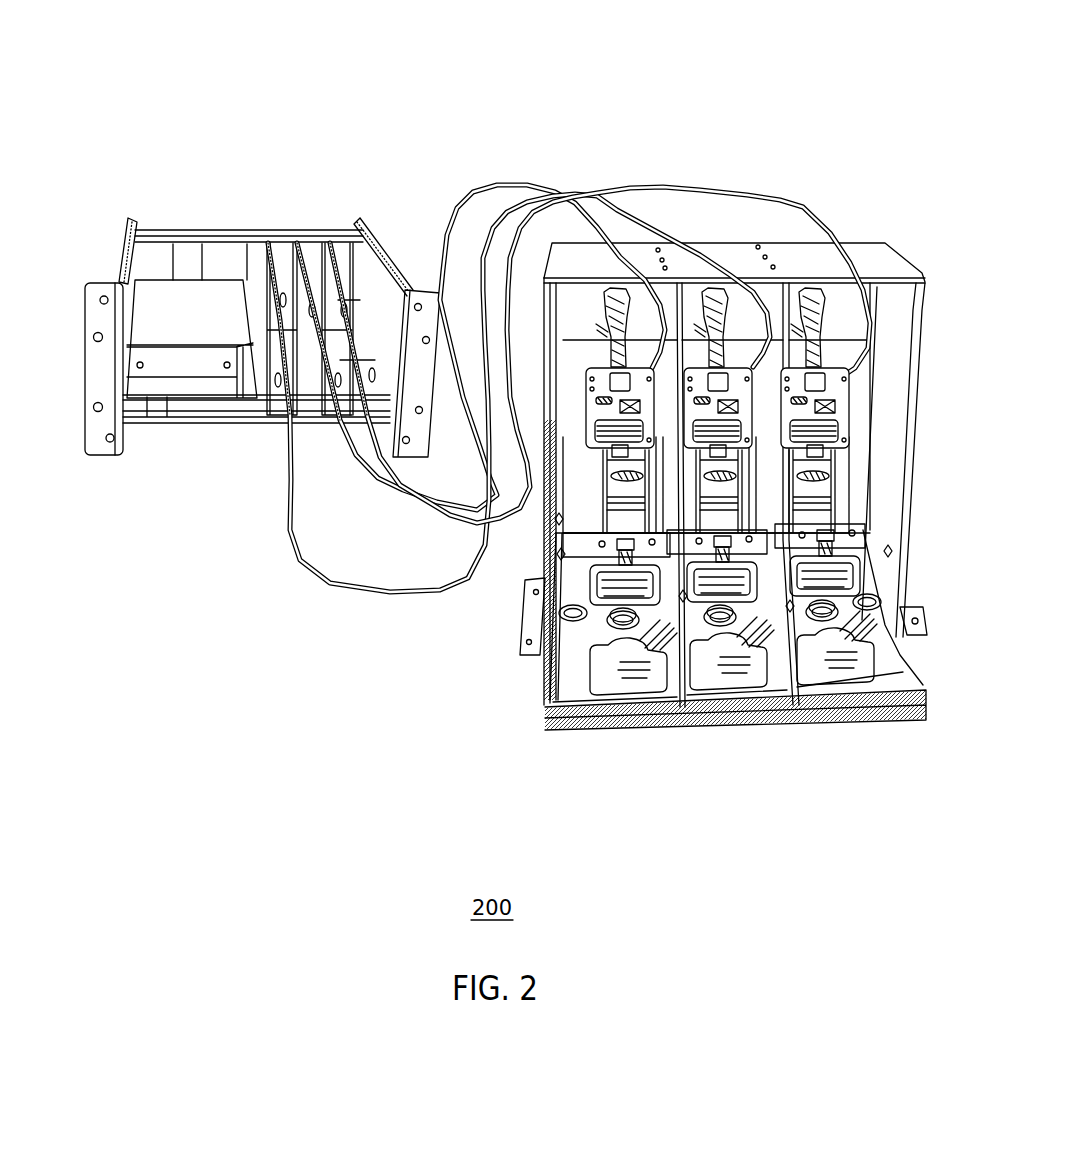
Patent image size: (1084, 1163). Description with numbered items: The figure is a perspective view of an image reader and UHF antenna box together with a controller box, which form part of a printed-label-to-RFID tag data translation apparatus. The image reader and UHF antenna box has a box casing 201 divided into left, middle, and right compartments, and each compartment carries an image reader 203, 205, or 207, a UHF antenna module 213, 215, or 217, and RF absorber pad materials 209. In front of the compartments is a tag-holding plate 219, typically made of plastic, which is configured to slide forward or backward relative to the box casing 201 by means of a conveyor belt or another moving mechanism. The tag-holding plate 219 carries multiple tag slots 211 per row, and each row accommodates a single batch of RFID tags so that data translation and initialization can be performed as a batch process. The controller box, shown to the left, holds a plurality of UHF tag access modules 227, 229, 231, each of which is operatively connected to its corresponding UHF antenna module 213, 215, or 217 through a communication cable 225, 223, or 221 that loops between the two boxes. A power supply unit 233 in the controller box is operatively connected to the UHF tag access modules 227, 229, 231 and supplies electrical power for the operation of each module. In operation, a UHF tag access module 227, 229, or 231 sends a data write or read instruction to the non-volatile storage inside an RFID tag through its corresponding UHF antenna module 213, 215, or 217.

The box casing 201 is at (874, 258).
The image reader 203 is at (606, 410).
The image reader 205 is at (701, 385).
The image reader 207 is at (798, 383).
The RF absorber pad materials 209 is at (582, 667).
The tag slot 211 is at (627, 665).
The UHF antenna module 213 is at (626, 521).
The UHF antenna module 215 is at (719, 521).
The UHF antenna module 217 is at (812, 521).
The tag-holding plate 219 is at (895, 666).
The communication cable 221 is at (630, 194).
The communication cable 223 is at (520, 204).
The communication cable 225 is at (457, 205).
The UHF tag access module 227 is at (266, 236).
The UHF tag access module 229 is at (298, 233).
The UHF tag access module 231 is at (330, 233).
The power supply unit 233 is at (192, 305).